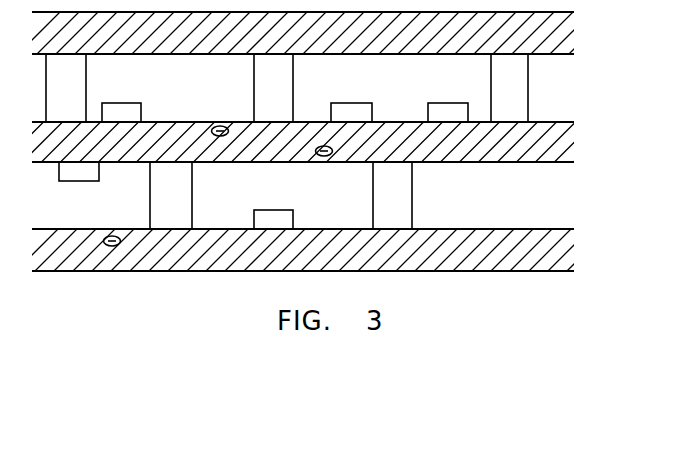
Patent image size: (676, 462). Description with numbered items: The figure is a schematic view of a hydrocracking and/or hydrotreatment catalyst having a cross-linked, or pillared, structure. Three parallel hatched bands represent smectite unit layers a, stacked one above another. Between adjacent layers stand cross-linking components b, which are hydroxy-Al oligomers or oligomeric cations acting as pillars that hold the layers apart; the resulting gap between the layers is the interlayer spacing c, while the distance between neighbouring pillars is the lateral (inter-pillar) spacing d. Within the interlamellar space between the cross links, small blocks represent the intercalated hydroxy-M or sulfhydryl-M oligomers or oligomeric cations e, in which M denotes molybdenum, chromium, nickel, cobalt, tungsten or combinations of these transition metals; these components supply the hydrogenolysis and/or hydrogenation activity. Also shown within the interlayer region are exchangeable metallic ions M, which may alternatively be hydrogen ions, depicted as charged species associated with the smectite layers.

The smectite unit layer a is at (309, 141).
The cross-linking component b is at (287, 141).
The interlayer spacing c is at (556, 55).
The lateral (inter-pillar) spacing d is at (491, 69).
The intercalated hydroxy-M or sulfhydryl-M oligomers or oligomeric cations e is at (263, 166).
The exchangeable metallic ion M is at (223, 171).